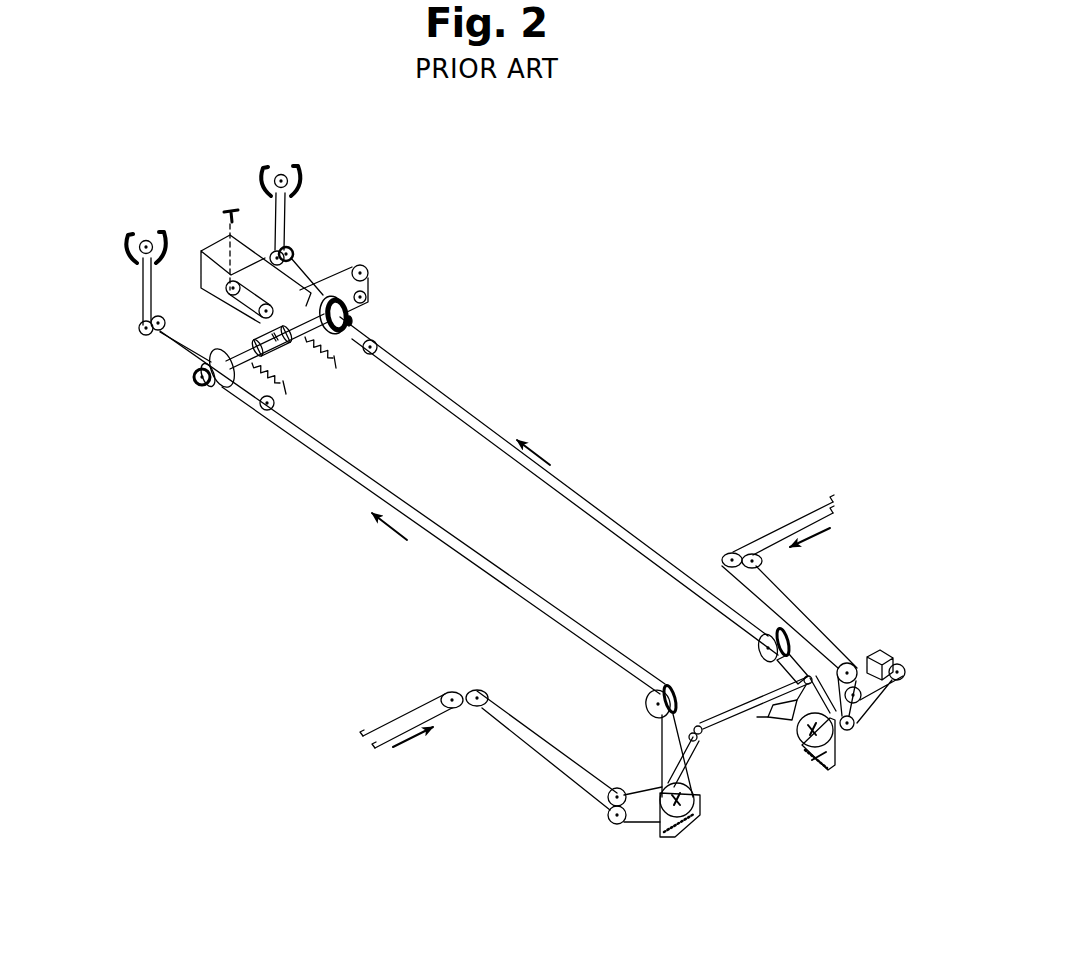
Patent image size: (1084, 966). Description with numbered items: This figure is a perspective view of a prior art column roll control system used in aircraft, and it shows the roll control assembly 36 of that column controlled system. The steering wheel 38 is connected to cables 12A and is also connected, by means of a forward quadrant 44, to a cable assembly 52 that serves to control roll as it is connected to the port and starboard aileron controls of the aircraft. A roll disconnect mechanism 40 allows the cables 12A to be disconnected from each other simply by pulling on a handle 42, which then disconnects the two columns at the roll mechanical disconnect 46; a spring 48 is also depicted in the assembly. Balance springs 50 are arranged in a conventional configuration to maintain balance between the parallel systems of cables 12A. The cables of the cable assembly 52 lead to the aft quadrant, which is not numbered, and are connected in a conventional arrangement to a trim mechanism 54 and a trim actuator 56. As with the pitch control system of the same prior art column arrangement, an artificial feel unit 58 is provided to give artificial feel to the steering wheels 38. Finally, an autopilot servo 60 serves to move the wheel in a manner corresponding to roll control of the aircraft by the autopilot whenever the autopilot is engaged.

The cables 12A is at (136, 292).
The roll control assembly 36 is at (432, 220).
The steering wheel 38 is at (271, 162).
The roll disconnect mechanism 40 is at (364, 310).
The handle 42 is at (223, 205).
The forward quadrant 44 is at (220, 393).
The roll mechanical disconnect 46 is at (290, 362).
The spring 48 is at (323, 338).
The balance springs 50 is at (322, 365).
The cable assembly 52 is at (783, 511).
The trim mechanism 54 is at (741, 692).
The trim actuator 56 is at (775, 727).
The artificial feel unit 58 is at (821, 772).
The autopilot servo 60 is at (890, 665).